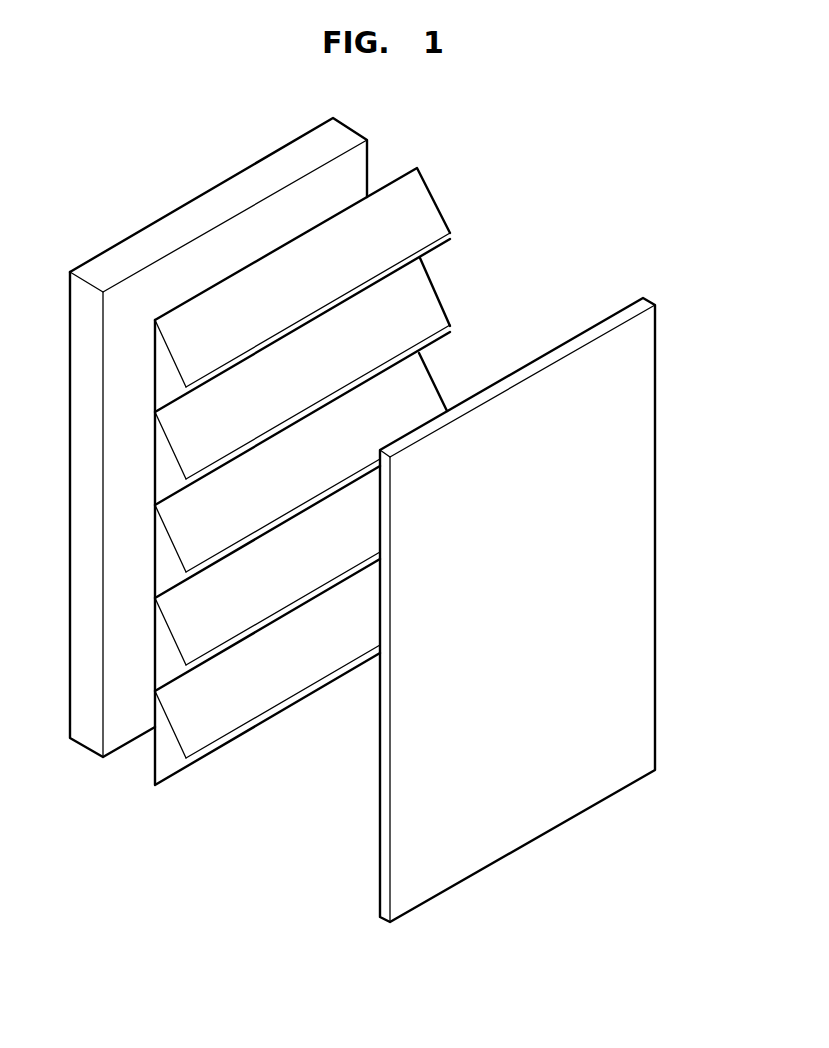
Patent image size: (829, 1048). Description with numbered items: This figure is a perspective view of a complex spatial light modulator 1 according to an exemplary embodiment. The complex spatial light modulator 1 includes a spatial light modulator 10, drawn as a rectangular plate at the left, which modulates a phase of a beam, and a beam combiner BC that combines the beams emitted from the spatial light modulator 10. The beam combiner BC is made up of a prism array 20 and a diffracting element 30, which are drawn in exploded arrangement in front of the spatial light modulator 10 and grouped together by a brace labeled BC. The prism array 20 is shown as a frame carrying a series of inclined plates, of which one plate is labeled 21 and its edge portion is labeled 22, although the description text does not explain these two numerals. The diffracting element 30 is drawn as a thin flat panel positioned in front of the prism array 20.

The complex spatial light modulator 1 is at (136, 175).
The spatial light modulator 10 is at (343, 138).
The prism array 20 is at (165, 755).
The louver plate 21 is at (425, 207).
The edge portion 22 is at (421, 258).
The diffracting element 30 is at (383, 900).
The beam combiner BC is at (157, 987).